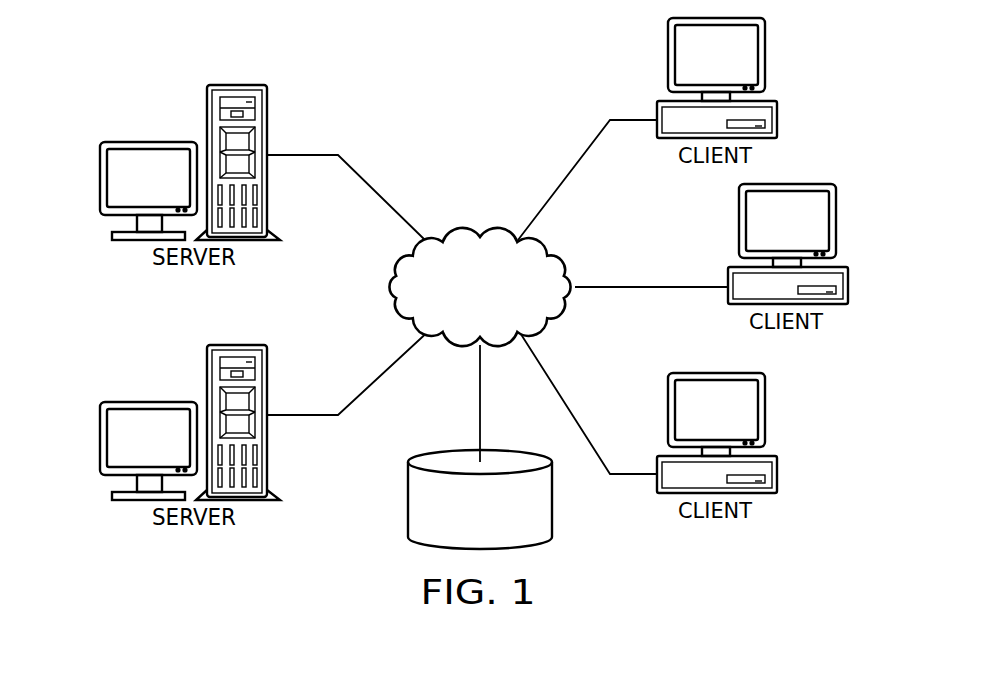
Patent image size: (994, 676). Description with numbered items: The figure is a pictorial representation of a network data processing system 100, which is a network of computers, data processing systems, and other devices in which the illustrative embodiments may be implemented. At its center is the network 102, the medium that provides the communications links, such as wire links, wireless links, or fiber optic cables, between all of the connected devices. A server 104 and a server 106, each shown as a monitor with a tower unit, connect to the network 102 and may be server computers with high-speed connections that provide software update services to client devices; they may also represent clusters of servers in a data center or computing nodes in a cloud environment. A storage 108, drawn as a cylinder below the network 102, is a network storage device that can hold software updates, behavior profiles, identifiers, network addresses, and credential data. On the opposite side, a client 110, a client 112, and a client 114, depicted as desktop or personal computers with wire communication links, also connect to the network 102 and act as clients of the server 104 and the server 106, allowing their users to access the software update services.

The network data processing system 100 is at (344, 63).
The network 102 is at (453, 230).
The server 104 is at (100, 176).
The server 106 is at (100, 437).
The storage 108 is at (408, 499).
The client 110 is at (777, 110).
The client 112 is at (848, 295).
The client 114 is at (777, 485).